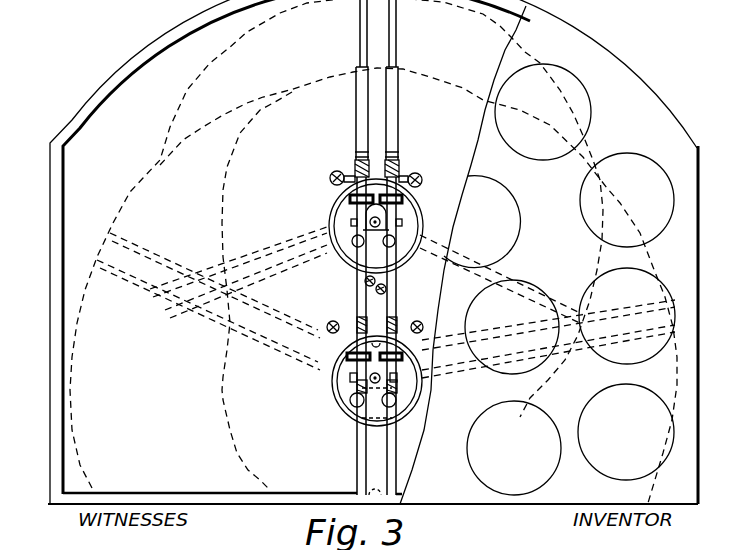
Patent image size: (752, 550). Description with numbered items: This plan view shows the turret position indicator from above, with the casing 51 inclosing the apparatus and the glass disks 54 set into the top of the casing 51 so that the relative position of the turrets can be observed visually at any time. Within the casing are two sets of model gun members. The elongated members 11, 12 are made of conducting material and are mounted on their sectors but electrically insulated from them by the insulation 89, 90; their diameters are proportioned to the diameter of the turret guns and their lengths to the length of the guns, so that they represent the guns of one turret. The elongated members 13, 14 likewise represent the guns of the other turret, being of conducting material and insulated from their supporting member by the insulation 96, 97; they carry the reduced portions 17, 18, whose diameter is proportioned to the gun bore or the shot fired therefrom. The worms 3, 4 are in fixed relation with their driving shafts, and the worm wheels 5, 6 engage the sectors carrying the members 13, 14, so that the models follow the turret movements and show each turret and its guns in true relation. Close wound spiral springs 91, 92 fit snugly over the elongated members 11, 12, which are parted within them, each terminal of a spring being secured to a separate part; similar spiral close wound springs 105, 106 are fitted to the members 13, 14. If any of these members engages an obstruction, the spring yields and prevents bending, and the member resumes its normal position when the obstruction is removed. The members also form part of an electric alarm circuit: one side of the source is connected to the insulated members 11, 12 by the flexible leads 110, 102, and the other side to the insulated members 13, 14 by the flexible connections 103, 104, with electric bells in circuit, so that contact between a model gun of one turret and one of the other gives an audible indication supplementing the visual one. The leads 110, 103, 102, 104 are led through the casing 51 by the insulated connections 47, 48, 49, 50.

The worm 3 is at (393, 415).
The worm 4 is at (351, 416).
The worm wheel 5 is at (399, 246).
The worm wheel 6 is at (350, 254).
The elongated member 11 is at (389, 282).
The elongated member 12 is at (362, 297).
The elongated member 13 is at (398, 141).
The elongated member 14 is at (356, 132).
The reduced portion 17 is at (397, 32).
The reduced portion 18 is at (359, 32).
The insulated connection 47 is at (414, 338).
The insulated connection 48 is at (405, 197).
The insulated connection 49 is at (346, 354).
The insulated connection 50 is at (346, 196).
The casing 51 is at (687, 136).
The glass disks 54 is at (571, 279).
The insulation 89 is at (375, 347).
The insulation 90 is at (333, 372).
The close wound spiral spring 91 is at (397, 325).
The close wound spiral spring 92 is at (370, 320).
The insulation 96 is at (421, 211).
The insulation 97 is at (333, 208).
The flexible lead 102 is at (342, 323).
The flexible connection 103 is at (417, 178).
The flexible connection 104 is at (339, 175).
The spiral close wound spring 105 is at (400, 167).
The spiral close wound spring 106 is at (354, 166).
The flexible lead 110 is at (423, 326).